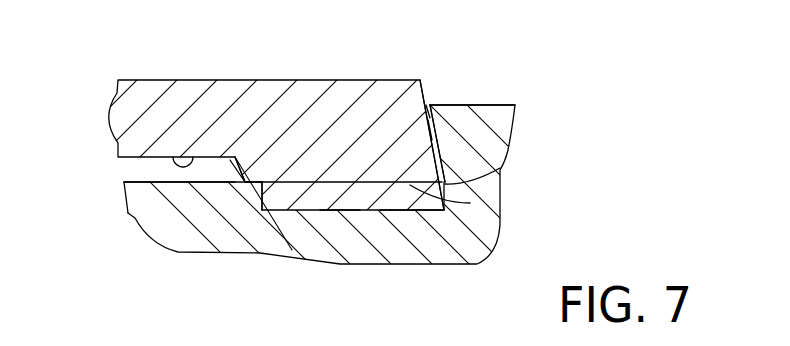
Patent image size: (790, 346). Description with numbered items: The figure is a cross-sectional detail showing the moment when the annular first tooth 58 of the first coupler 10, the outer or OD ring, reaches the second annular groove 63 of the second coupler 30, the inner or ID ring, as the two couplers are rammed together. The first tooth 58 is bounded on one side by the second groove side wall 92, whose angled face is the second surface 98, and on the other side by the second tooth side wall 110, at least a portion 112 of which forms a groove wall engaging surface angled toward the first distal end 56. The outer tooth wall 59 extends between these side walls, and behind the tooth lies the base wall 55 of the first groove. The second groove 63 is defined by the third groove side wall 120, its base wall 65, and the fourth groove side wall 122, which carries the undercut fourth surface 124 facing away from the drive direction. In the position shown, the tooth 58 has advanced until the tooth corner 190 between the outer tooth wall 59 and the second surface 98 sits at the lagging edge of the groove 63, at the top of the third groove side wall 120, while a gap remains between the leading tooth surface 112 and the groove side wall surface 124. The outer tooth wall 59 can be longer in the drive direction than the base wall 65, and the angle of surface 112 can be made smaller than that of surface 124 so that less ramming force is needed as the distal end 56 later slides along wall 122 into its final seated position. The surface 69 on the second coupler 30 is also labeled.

The first coupler 10 is at (292, 113).
The second coupler 30 is at (153, 248).
The base wall 55 is at (192, 160).
The first distal end 56 is at (500, 168).
The first tooth 58 is at (312, 107).
The outer tooth wall 59 is at (470, 203).
The second annular groove 63 is at (332, 193).
The base wall 65 is at (378, 207).
The upper surface of lower member 69 is at (165, 183).
The second annular groove side wall 92 is at (247, 165).
The second surface 98 is at (235, 160).
The second tooth side wall 110 is at (427, 88).
The groove wall engaging surface 112 is at (431, 101).
The third annular groove side wall 120 is at (262, 197).
The fourth annular groove side wall 122 is at (432, 133).
The fourth surface 124 is at (432, 113).
The tooth corner 190 is at (238, 172).